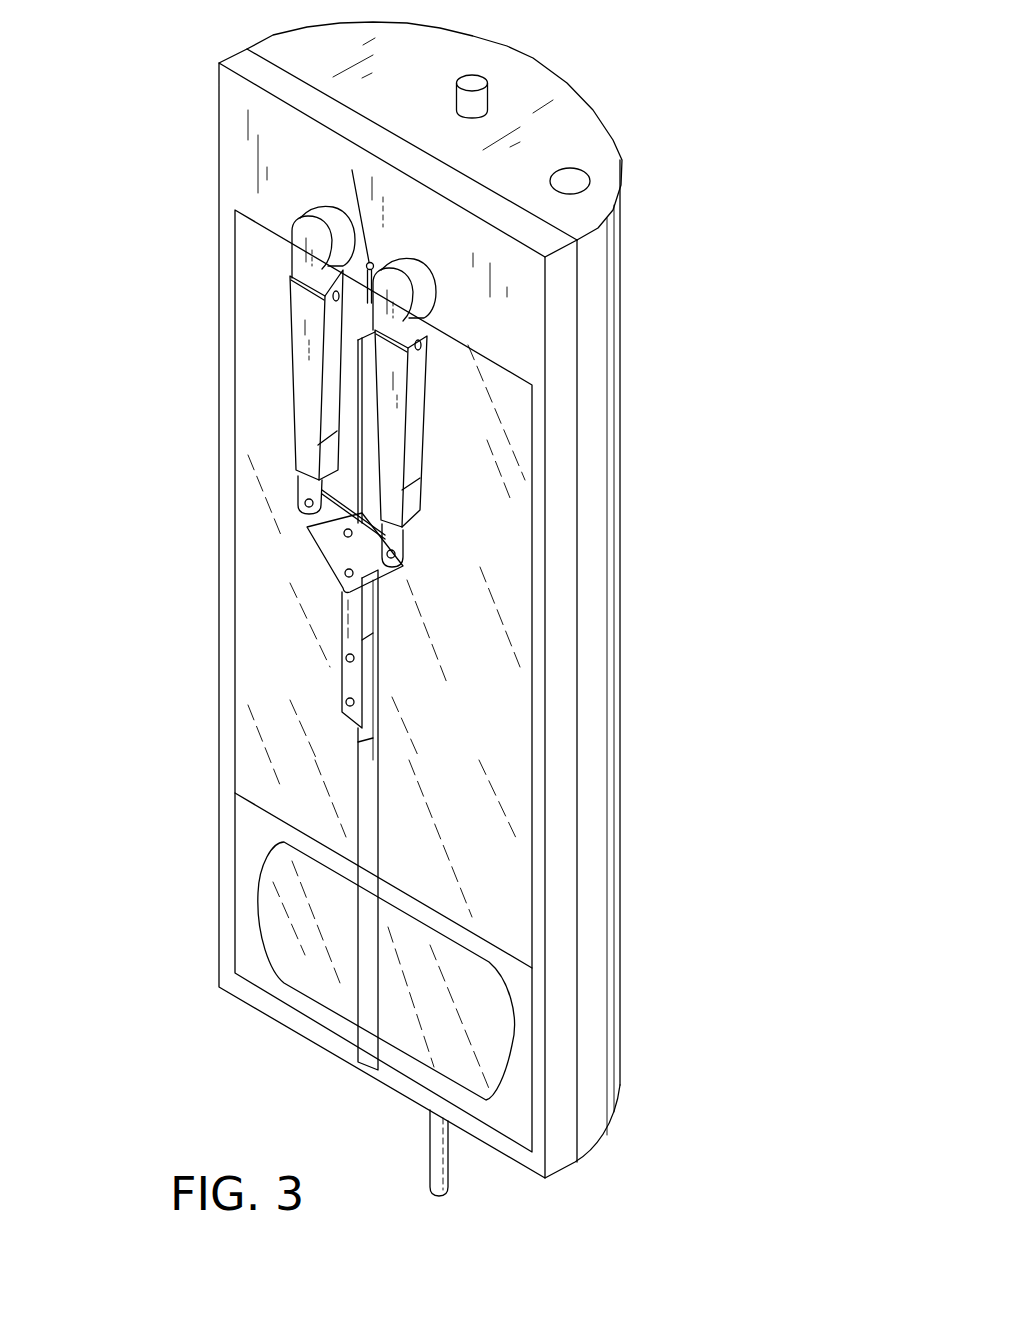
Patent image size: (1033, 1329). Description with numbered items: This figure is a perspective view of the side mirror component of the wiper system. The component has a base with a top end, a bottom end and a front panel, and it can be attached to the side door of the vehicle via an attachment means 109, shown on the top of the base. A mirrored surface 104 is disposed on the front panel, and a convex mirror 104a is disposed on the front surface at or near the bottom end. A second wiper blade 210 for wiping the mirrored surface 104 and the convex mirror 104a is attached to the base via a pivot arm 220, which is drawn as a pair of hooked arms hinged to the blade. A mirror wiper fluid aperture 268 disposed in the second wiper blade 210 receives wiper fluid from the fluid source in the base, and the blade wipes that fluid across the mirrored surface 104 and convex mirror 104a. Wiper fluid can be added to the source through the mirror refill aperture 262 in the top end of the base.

The mirrored surface 104 is at (497, 575).
The convex mirror 104a is at (467, 988).
The attachment means 109 is at (477, 80).
The mirror refill aperture 262 is at (572, 182).
The mirror wiper fluid aperture 268 is at (352, 170).
The pivot arm 220 is at (385, 425).
The second wiper blade 210 is at (378, 819).